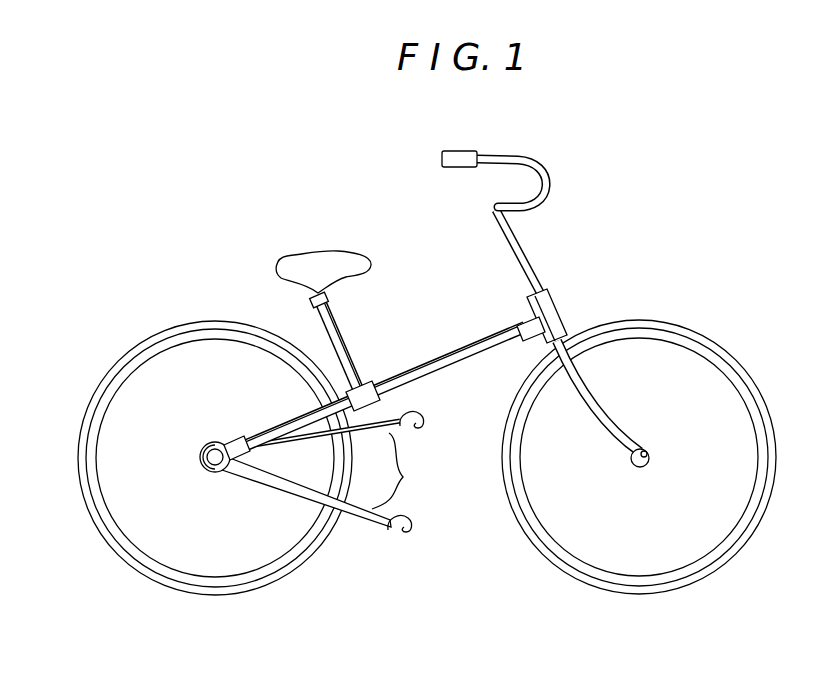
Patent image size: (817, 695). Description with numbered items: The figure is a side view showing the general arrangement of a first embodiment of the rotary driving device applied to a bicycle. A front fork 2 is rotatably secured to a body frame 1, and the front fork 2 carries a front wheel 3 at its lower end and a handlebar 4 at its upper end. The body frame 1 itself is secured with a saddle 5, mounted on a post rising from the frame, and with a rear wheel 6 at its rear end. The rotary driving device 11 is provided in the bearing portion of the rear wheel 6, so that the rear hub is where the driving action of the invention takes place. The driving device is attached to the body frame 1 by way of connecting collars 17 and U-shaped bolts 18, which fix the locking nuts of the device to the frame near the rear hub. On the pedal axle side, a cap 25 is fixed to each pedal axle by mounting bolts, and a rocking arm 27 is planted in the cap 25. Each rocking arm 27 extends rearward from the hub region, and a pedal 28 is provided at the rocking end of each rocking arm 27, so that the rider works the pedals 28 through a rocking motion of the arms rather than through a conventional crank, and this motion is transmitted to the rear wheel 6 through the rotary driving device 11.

The body frame 1 is at (444, 358).
The front fork 2 is at (612, 420).
The front wheel 3 is at (768, 411).
The handlebar 4 is at (549, 178).
The saddle 5 is at (328, 260).
The rear wheel 6 is at (134, 352).
The rotary driving device 11 is at (204, 432).
The connecting collar 17 is at (228, 440).
The U-shaped bolt 18 is at (210, 472).
The cap 25 is at (205, 461).
The rocking arm 27 is at (326, 474).
The pedal 28 is at (423, 419).